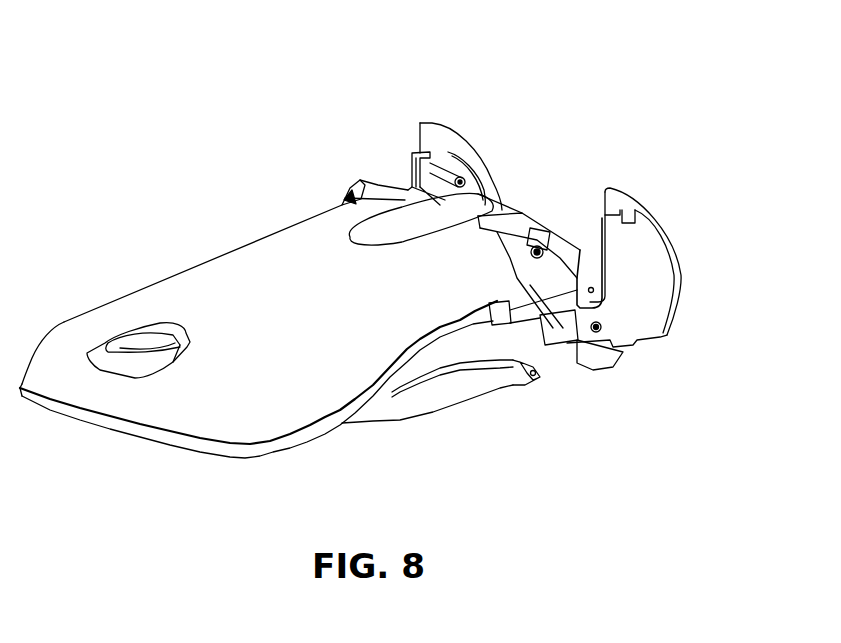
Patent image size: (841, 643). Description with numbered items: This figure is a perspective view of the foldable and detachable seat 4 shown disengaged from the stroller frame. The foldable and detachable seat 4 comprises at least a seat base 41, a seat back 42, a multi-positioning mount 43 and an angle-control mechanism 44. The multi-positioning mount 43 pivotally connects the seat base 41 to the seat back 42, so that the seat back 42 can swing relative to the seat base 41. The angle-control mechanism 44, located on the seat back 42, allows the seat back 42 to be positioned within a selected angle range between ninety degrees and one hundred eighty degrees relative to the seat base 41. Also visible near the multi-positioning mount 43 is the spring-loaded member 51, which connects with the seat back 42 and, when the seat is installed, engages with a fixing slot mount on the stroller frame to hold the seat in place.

The foldable and detachable seat 4 is at (240, 122).
The seat base 41 is at (473, 387).
The seat back 42 is at (255, 257).
The multi-positioning mount 43 is at (444, 150).
The angle-control mechanism 44 is at (127, 345).
The spring-loaded member 51 is at (613, 360).